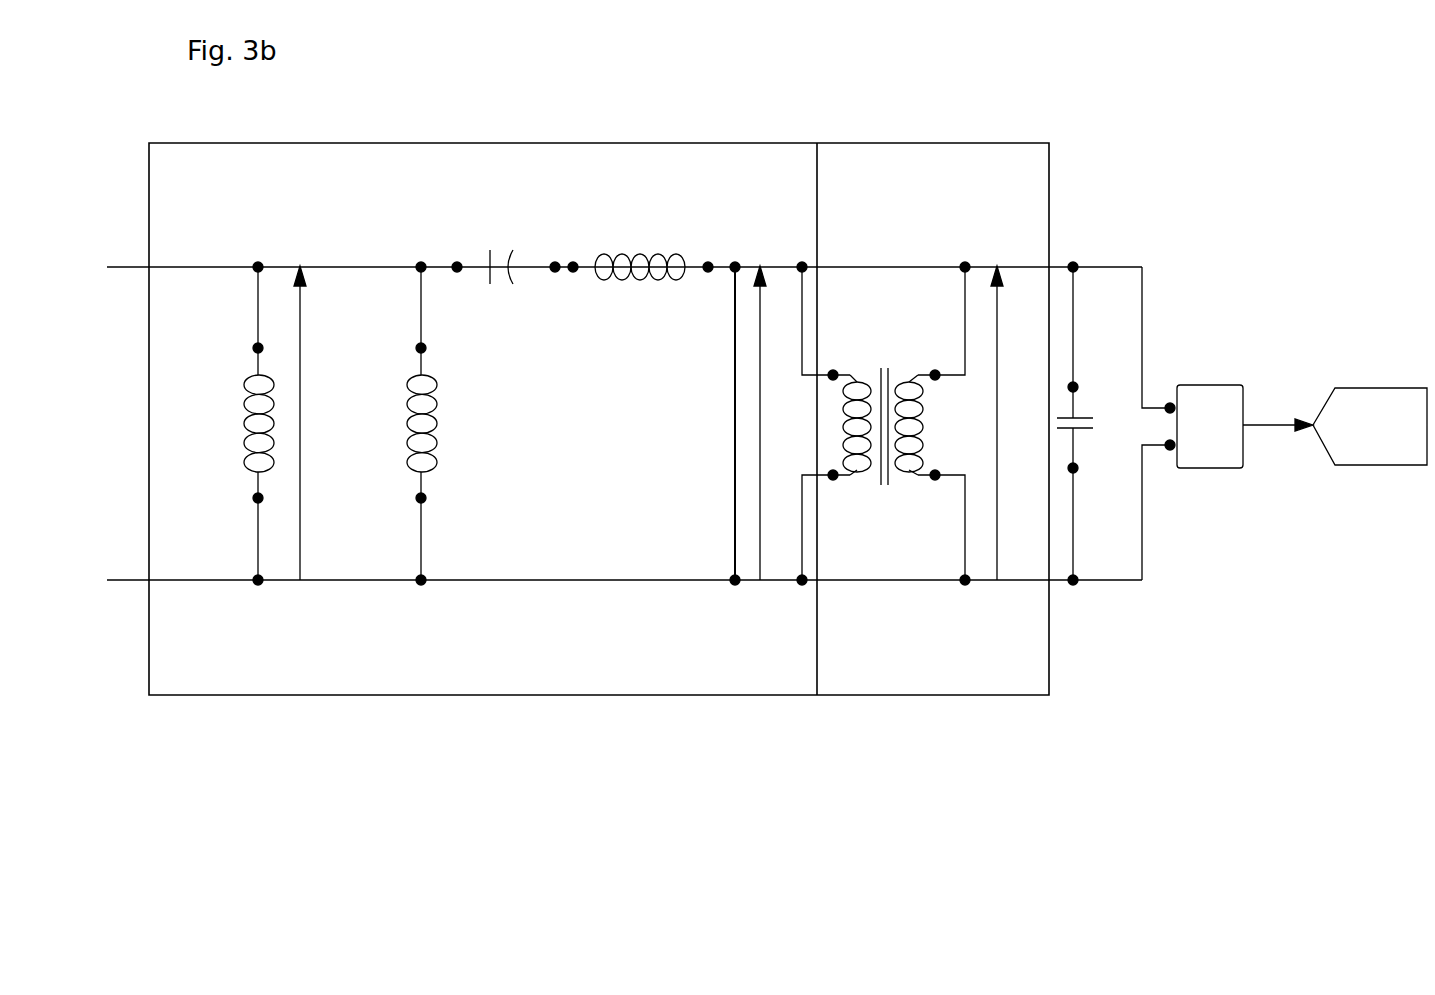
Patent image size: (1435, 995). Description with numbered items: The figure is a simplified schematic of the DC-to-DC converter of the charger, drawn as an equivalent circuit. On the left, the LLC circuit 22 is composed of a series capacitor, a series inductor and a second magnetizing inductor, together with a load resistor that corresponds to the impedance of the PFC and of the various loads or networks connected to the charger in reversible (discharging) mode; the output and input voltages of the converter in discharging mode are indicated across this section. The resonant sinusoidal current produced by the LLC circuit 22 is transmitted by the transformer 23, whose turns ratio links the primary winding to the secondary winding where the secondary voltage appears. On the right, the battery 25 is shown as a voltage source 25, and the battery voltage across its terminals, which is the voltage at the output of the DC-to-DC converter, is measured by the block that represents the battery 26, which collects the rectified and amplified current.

The LLC circuit 22 is at (615, 658).
The transformer 23 is at (940, 658).
The voltage source 25 is at (1095, 427).
The battery 26 is at (1213, 385).